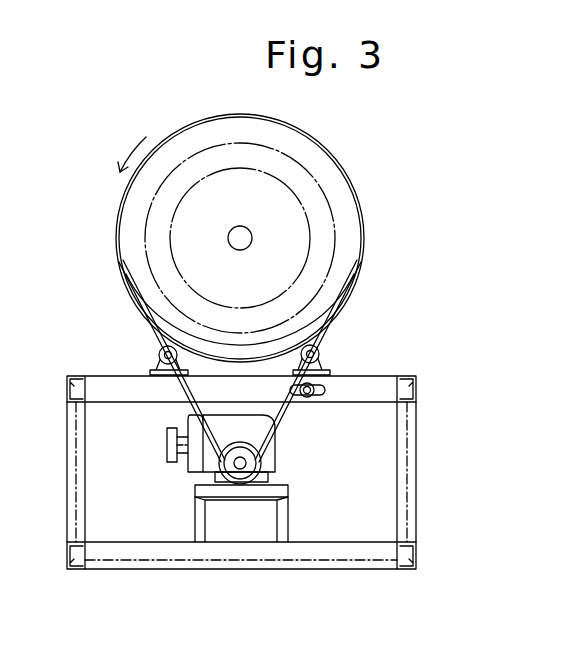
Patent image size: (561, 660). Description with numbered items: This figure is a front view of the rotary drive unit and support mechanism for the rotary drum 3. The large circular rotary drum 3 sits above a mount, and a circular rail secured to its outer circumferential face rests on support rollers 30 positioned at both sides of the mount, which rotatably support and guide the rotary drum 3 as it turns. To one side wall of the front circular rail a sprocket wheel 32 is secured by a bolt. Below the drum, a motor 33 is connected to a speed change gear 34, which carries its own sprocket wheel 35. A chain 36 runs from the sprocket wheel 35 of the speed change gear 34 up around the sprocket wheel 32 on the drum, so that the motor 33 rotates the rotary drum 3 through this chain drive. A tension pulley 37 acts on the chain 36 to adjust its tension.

The rotary drum 3 is at (350, 212).
The sprocket wheel 32 is at (359, 276).
The support rollers 30 is at (159, 354).
The motor 33 is at (195, 463).
The speed change gear 34 is at (270, 478).
The sprocket wheel 35 is at (240, 470).
The chain 36 is at (282, 432).
The tension pulley 37 is at (310, 397).